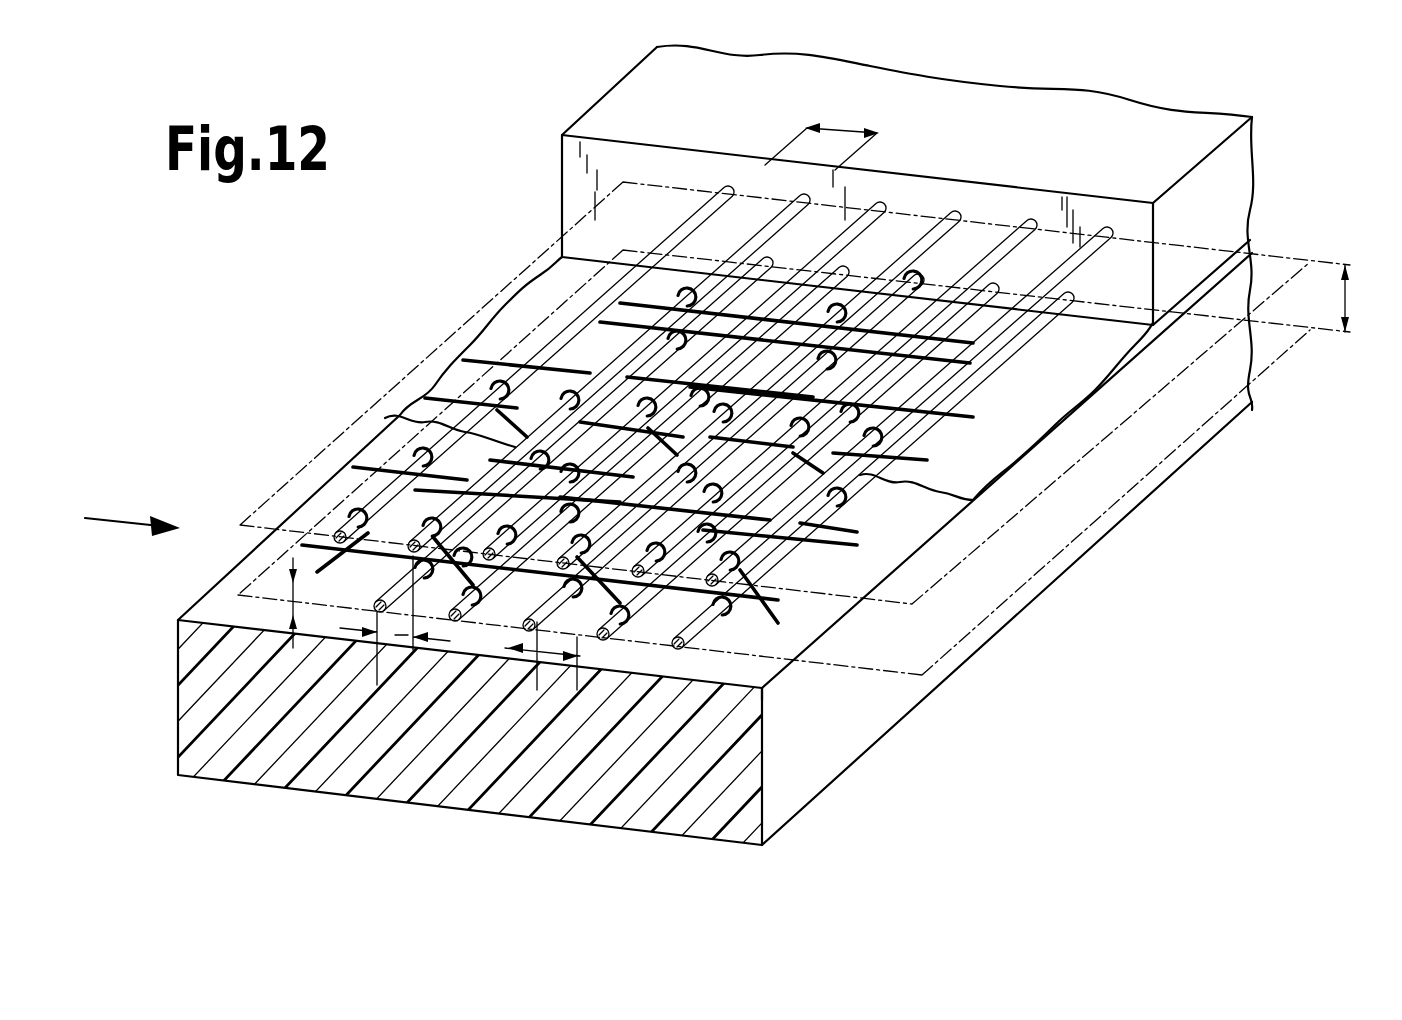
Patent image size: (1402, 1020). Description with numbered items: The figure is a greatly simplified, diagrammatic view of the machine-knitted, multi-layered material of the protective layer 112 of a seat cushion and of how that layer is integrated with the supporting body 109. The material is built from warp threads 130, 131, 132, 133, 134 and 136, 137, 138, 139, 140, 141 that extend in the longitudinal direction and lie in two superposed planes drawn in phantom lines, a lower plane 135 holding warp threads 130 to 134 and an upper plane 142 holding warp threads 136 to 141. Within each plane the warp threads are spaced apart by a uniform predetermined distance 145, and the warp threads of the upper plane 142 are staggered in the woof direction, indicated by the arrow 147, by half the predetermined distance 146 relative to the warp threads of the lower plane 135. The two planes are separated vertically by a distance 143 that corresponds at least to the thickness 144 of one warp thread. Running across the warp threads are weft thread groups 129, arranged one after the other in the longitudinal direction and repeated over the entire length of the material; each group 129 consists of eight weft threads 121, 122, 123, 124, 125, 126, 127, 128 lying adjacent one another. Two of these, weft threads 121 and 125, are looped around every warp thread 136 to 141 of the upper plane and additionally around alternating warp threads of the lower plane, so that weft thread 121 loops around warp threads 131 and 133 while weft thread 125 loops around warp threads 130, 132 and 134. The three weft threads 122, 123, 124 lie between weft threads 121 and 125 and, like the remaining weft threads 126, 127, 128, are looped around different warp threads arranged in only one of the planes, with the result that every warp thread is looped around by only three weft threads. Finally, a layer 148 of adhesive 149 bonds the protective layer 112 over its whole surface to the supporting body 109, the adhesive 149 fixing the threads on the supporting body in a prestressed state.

The supporting body 109 is at (1053, 575).
The protective layer 112 is at (352, 489).
The weft thread 121 is at (308, 556).
The weft thread 122 is at (346, 545).
The weft thread 123 is at (828, 542).
The weft thread 124 is at (855, 535).
The weft thread 125 is at (428, 398).
The weft thread 126 is at (483, 358).
The weft thread 127 is at (1030, 365).
The weft thread 128 is at (1045, 345).
The weft thread group 129 is at (394, 452).
The warp thread 130 is at (384, 596).
The warp thread 131 is at (421, 620).
The warp thread 132 is at (570, 600).
The warp thread 133 is at (643, 600).
The warp thread 134 is at (760, 680).
The lower plane 135 is at (920, 656).
The warp thread 136 is at (725, 185).
The warp thread 137 is at (800, 197).
The warp thread 138 is at (888, 205).
The warp thread 139 is at (962, 213).
The warp thread 140 is at (1035, 222).
The warp thread 141 is at (1110, 230).
The upper plane 142 is at (1260, 277).
The distance 143 is at (1348, 302).
The thickness 144 is at (288, 556).
The predetermined distance 145 is at (838, 132).
The half the predetermined distance 146 is at (400, 632).
The arrow 147 is at (115, 517).
The layer of adhesive 148 is at (1052, 440).
The adhesive 149 is at (1062, 400).